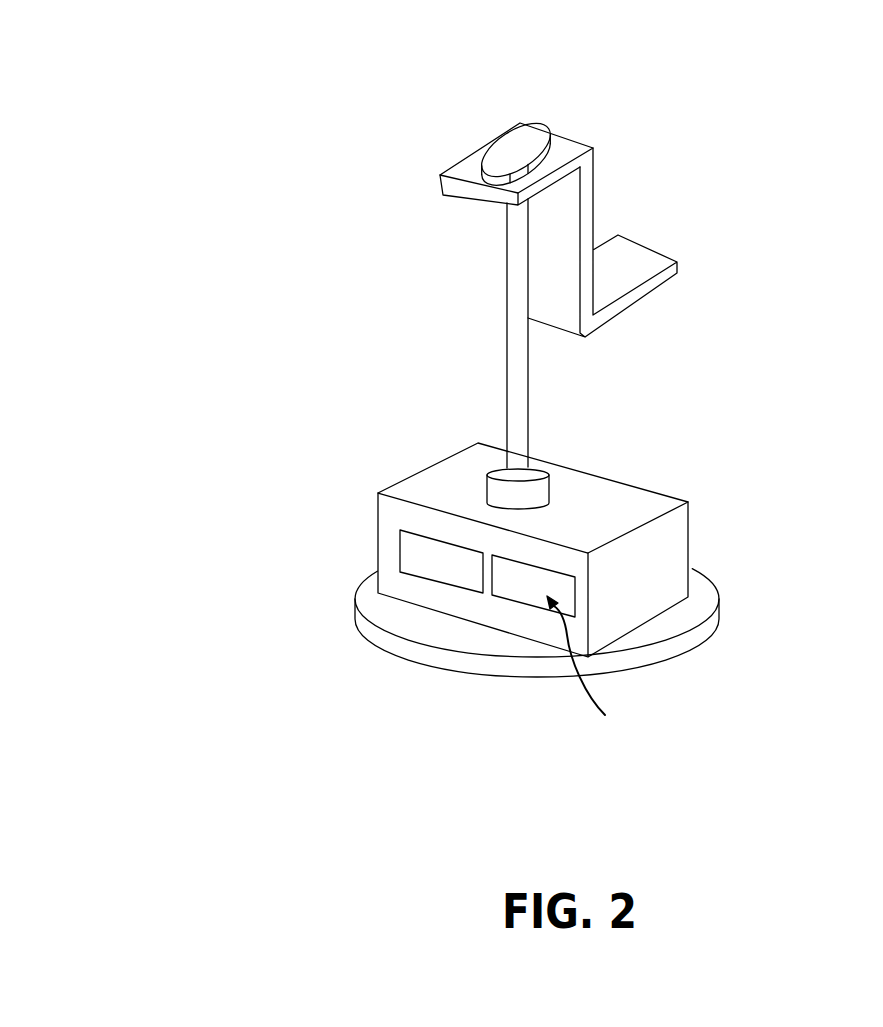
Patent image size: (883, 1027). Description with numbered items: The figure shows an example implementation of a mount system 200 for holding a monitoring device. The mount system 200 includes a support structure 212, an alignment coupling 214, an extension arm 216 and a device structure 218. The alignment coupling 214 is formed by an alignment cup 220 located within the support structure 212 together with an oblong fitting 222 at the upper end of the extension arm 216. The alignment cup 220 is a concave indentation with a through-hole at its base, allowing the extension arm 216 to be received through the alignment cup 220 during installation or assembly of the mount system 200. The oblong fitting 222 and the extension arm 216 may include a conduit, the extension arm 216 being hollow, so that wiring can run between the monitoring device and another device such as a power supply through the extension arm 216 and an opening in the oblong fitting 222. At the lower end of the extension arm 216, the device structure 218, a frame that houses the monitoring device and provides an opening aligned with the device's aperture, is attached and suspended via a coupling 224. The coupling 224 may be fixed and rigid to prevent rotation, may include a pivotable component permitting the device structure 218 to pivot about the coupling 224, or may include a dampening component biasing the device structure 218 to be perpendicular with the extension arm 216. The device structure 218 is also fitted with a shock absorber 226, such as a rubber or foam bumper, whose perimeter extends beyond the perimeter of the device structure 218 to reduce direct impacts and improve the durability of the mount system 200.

The mount system 200 is at (196, 109).
The support structure 212 is at (658, 260).
The alignment coupling 214 is at (474, 131).
The extension arm 216 is at (517, 273).
The device structure 218 is at (380, 493).
The alignment cup 220 is at (547, 160).
The oblong fitting 222 is at (530, 133).
The coupling 224 is at (545, 490).
The shock absorber 226 is at (362, 628).